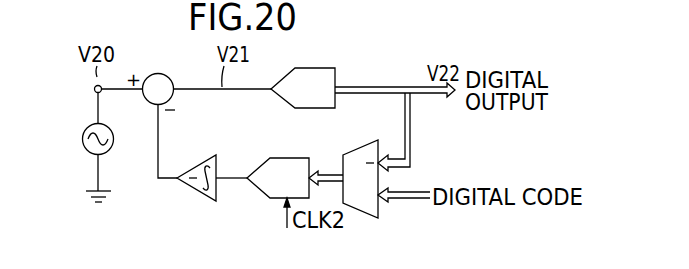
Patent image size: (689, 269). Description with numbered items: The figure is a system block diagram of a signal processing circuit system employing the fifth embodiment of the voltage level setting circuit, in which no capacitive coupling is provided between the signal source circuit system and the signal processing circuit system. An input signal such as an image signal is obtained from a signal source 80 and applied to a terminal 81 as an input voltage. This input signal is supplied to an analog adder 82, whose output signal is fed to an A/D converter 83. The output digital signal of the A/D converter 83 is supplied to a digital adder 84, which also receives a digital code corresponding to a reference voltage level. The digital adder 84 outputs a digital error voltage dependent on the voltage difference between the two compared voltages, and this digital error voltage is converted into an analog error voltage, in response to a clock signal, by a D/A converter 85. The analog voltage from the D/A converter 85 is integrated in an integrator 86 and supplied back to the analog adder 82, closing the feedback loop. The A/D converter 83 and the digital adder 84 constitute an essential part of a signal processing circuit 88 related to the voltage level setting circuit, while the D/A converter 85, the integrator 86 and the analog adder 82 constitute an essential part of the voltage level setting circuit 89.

The signal source 80 is at (83, 143).
The terminal 81 is at (94, 89).
The analog adder 82 is at (158, 73).
The A/D converter 83 is at (315, 68).
The digital adder 84 is at (359, 145).
The D/A converter 85 is at (283, 158).
The integrator 86 is at (197, 197).
The signal processing circuit 88 is at (376, 73).
The voltage level setting circuit 89 is at (232, 165).